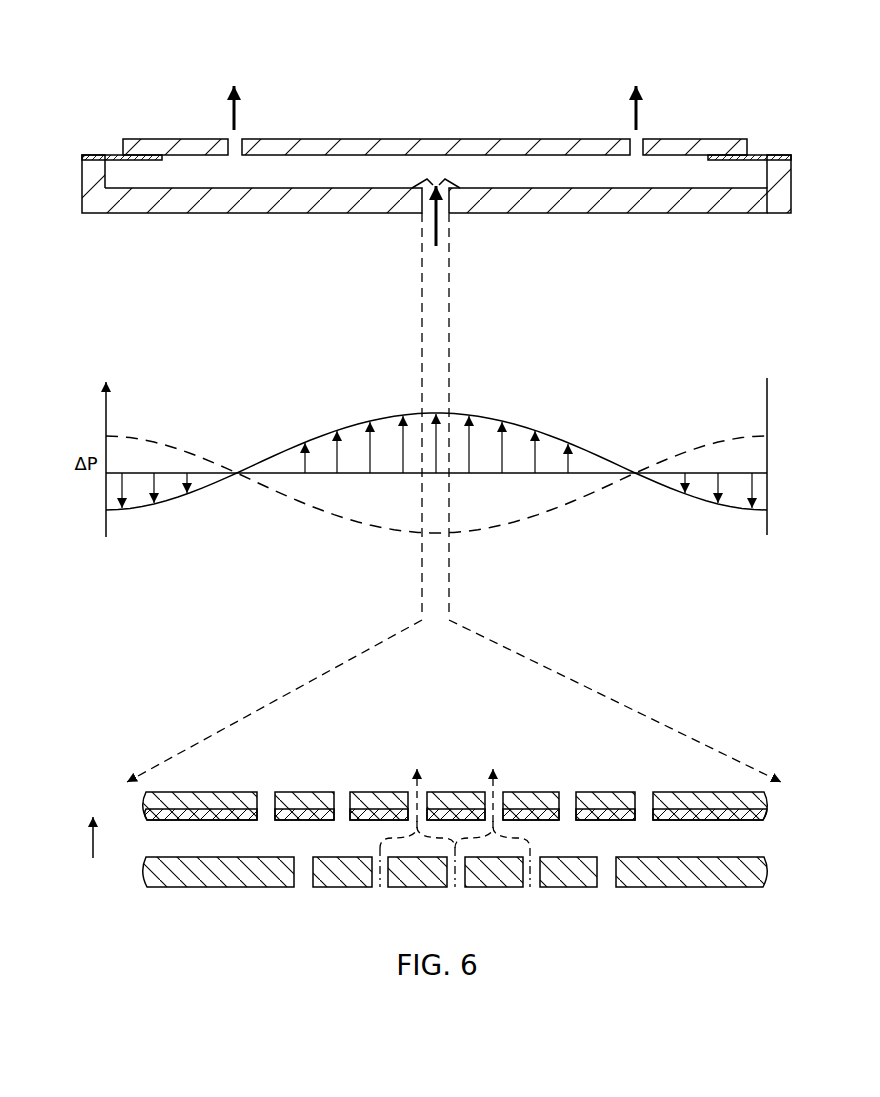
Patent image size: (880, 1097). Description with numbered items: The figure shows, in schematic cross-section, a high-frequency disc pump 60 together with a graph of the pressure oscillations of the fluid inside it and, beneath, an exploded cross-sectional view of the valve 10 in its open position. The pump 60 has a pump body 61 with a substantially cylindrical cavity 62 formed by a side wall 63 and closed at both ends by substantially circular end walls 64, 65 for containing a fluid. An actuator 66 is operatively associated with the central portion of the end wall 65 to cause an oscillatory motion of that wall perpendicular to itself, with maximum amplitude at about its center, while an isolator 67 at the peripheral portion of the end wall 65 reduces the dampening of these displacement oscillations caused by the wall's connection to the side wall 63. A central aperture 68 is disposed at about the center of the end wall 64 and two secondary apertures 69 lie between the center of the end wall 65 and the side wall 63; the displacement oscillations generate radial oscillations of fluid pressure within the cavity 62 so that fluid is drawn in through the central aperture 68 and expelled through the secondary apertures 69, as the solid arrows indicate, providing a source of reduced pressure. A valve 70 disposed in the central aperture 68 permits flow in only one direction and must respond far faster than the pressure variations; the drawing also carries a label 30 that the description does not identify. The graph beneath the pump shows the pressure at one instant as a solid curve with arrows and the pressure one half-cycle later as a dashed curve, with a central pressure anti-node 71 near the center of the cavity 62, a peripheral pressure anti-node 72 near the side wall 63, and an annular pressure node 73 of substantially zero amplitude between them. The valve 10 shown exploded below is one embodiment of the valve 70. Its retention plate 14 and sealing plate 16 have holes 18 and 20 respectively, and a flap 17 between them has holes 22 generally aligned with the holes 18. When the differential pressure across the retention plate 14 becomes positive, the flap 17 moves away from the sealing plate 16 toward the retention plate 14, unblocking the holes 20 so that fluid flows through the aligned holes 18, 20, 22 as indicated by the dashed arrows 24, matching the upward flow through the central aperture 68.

The pump 60 is at (284, 61).
The pump body 61 is at (670, 205).
The cavity 62 is at (563, 175).
The side wall 63 is at (107, 178).
The end wall 64 is at (623, 178).
The end wall 65 is at (485, 160).
The actuator 66 is at (362, 138).
The isolator 67 is at (118, 154).
The central aperture 68 is at (424, 208).
The secondary apertures 69 is at (233, 138).
The valve 70 is at (426, 181).
The openings between plates 30 is at (147, 162).
The central pressure anti-node 71 is at (432, 412).
The peripheral pressure anti-node 72 is at (107, 437).
The annular pressure node 73 is at (237, 473).
The valve 10 is at (480, 716).
The retention plate 14 is at (232, 800).
The sealing plate 16 is at (718, 880).
The flap 17 is at (228, 822).
The holes 18 is at (341, 798).
The holes 20 is at (303, 884).
The holes 22 is at (568, 815).
The dashed arrows 24 is at (520, 837).